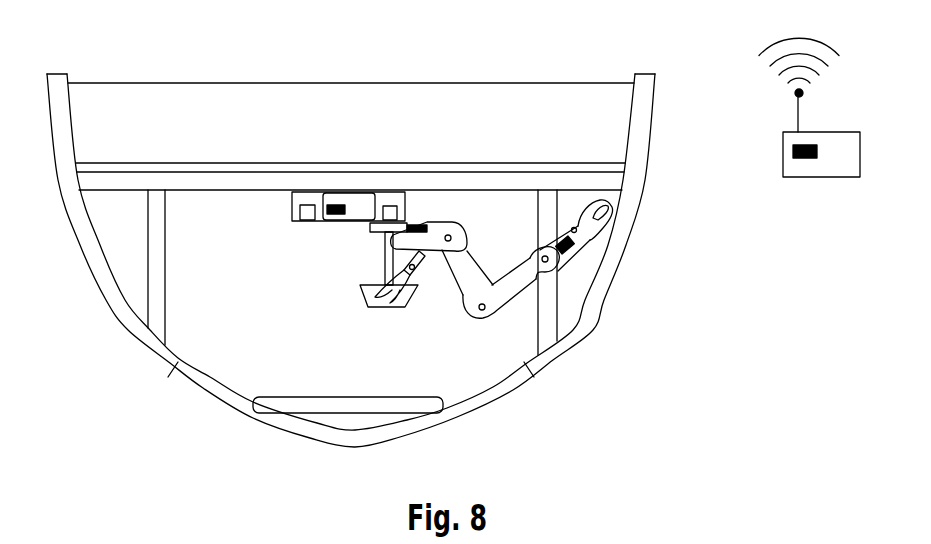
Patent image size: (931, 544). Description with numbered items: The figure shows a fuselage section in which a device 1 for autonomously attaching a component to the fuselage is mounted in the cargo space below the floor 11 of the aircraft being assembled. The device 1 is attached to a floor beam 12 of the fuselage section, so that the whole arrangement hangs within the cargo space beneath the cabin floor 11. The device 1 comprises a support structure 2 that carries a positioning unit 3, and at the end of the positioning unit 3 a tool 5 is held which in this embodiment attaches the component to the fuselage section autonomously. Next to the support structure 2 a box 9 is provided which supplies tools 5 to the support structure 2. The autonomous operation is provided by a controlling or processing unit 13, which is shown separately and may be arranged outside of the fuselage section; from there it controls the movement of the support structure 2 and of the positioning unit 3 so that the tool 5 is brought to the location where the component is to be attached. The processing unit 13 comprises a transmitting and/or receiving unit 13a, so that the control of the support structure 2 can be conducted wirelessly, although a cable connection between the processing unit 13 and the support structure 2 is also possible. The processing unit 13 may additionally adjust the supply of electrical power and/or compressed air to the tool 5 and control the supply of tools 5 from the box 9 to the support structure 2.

The device 1 is at (338, 245).
The support structure 2 is at (487, 248).
The positioning unit 3 is at (503, 308).
The tool 5 is at (586, 237).
The box 9 is at (403, 300).
The floor 11 is at (537, 142).
The floor beam 12 is at (207, 184).
The processing unit 13 is at (357, 203).
The transmitting and/or receiving unit 13a is at (796, 96).